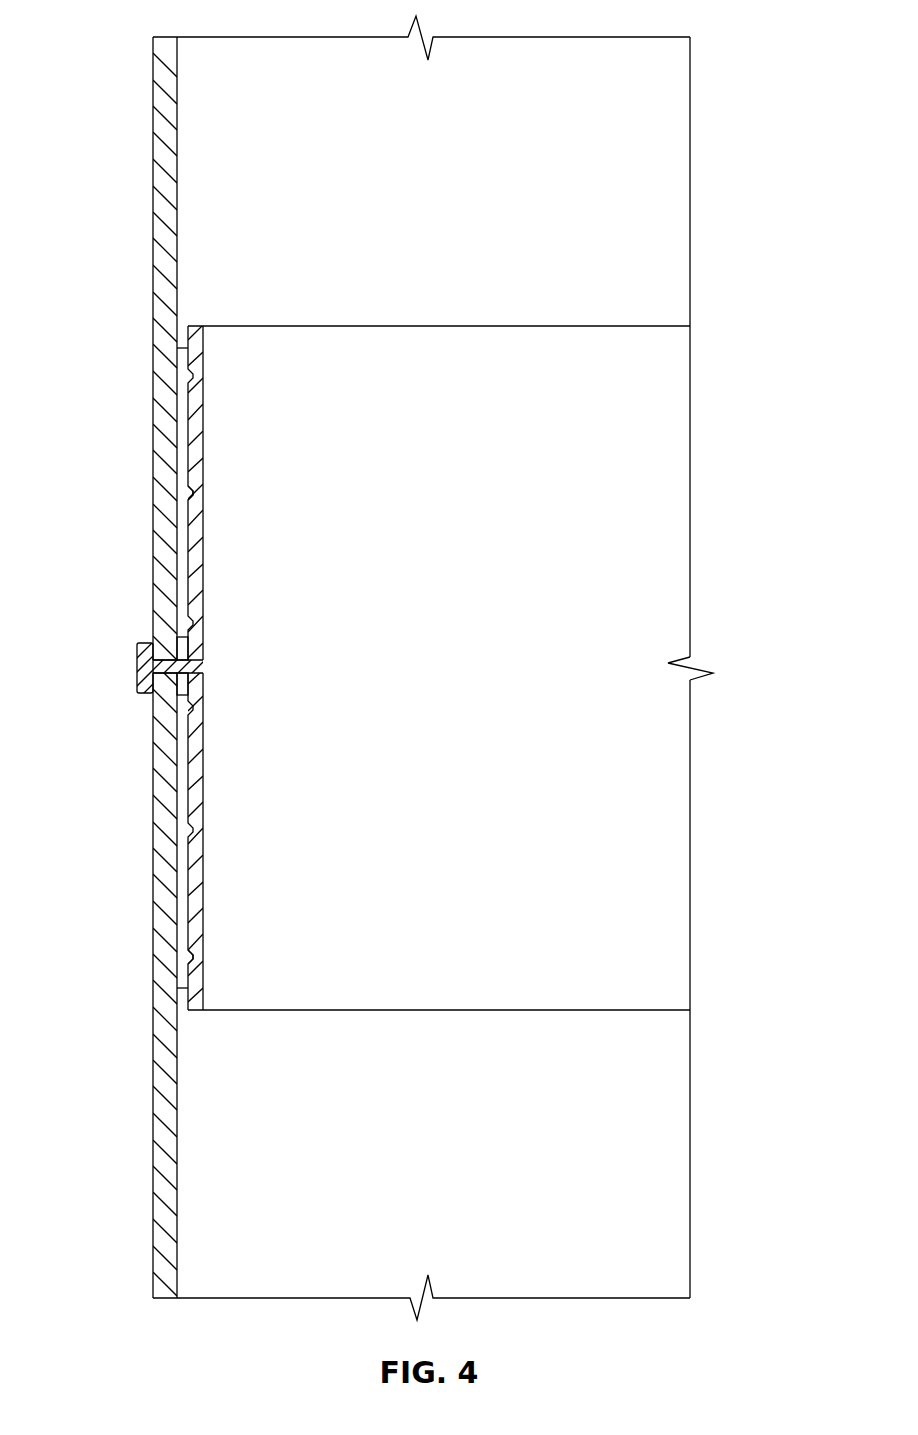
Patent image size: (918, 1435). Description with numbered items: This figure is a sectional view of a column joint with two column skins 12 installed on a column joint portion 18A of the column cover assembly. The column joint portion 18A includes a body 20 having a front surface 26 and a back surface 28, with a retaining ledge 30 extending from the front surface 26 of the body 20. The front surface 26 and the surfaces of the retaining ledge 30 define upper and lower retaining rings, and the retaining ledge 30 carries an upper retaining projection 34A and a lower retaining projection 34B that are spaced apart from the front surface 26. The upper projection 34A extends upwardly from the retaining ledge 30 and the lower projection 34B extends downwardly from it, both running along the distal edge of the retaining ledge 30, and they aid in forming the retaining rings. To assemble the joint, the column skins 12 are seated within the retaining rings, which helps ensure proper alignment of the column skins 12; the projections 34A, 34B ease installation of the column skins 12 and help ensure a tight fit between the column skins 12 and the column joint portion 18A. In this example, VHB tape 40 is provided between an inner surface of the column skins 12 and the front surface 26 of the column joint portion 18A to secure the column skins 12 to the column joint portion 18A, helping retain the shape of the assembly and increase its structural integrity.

The column skin 12 is at (165, 105).
The column joint portion 18A is at (680, 449).
The body 20 is at (680, 567).
The front surface 26 is at (182, 565).
The back surface 28 is at (463, 663).
The retaining ledge 30 is at (138, 678).
The upper retaining projection 34A is at (148, 642).
The lower retaining projection 34B is at (148, 690).
The VHB tape 40 is at (187, 493).